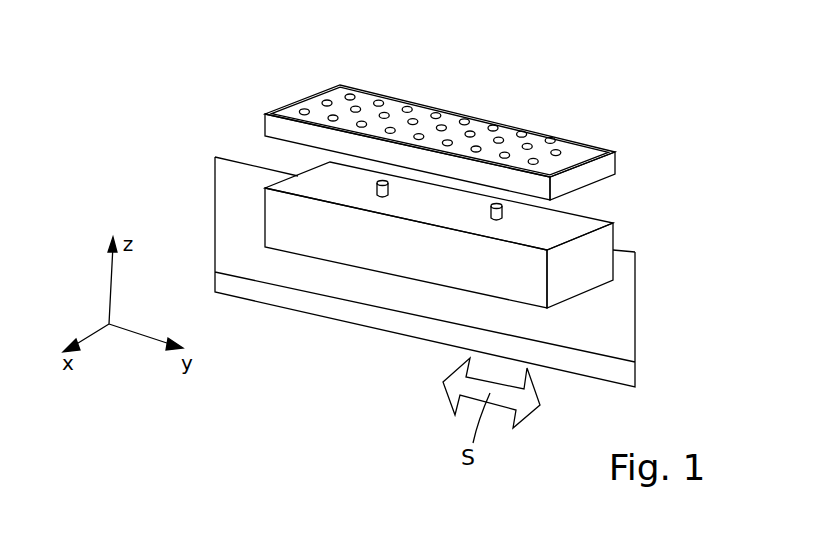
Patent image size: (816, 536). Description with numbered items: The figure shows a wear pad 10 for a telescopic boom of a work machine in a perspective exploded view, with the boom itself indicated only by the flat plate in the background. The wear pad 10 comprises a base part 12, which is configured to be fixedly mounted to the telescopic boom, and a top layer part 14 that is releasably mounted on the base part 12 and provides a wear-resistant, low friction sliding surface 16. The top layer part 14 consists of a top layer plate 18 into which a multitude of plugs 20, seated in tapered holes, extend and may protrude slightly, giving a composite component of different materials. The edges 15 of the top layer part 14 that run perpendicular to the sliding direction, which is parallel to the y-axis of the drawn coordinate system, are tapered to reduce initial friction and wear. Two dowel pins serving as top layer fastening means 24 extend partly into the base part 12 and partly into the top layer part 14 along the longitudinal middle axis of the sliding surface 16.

The wear pad 10 is at (385, 66).
The base part 12 is at (600, 270).
The top layer part 14 is at (605, 167).
The edges 15 is at (296, 105).
The sliding surface 16 is at (535, 140).
The top layer plate 18 is at (292, 127).
The plugs 20 is at (443, 129).
The top layer fastening means 24 is at (380, 197).